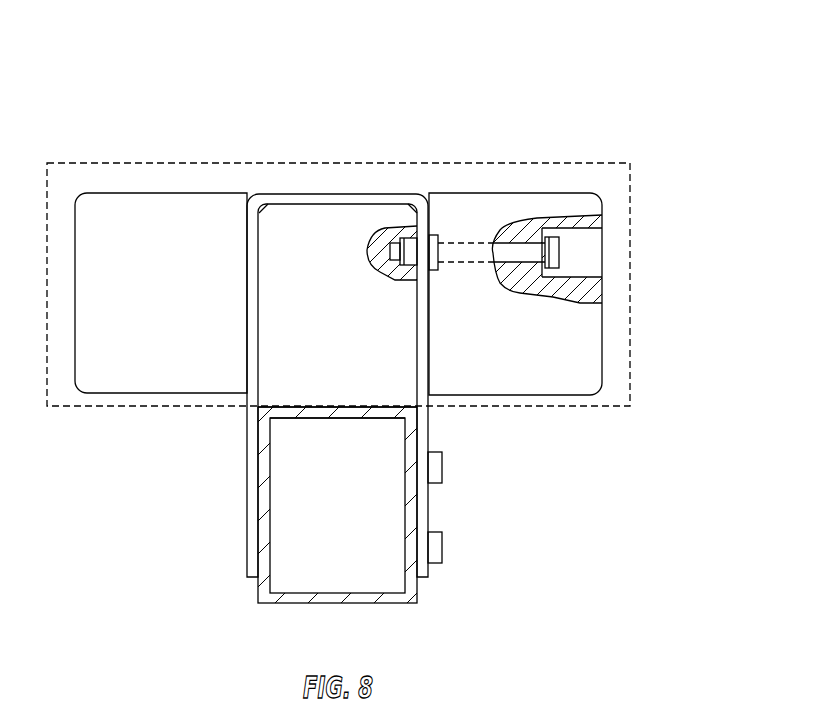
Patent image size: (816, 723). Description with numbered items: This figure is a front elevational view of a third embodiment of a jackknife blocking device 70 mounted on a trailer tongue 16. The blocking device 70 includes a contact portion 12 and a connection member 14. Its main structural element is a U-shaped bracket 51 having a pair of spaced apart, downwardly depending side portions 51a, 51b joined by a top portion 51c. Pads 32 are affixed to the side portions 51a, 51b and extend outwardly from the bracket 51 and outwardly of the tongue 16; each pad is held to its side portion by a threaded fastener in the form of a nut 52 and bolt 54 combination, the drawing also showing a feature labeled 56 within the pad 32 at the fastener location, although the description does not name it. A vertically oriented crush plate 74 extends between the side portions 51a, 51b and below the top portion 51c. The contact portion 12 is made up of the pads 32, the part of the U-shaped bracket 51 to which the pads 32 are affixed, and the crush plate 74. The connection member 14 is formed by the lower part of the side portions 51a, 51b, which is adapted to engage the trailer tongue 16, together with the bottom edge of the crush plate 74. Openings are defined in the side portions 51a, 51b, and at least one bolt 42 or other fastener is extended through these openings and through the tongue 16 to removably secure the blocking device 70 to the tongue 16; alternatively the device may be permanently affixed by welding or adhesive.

The blocking device 70 is at (512, 82).
The contact portion 12 is at (140, 162).
The pads 32 is at (157, 384).
The recess 56 is at (583, 252).
The bolt 54 is at (553, 253).
The nut 52 is at (397, 273).
The connection member 14 is at (474, 501).
The U-shaped bracket 51 is at (258, 460).
The side portion 51a is at (252, 562).
The side portion 51b is at (417, 446).
The top portion 51c is at (334, 194).
The bolt 42 is at (434, 471).
The tongue 16 is at (318, 598).
The crush plate 74 is at (378, 386).